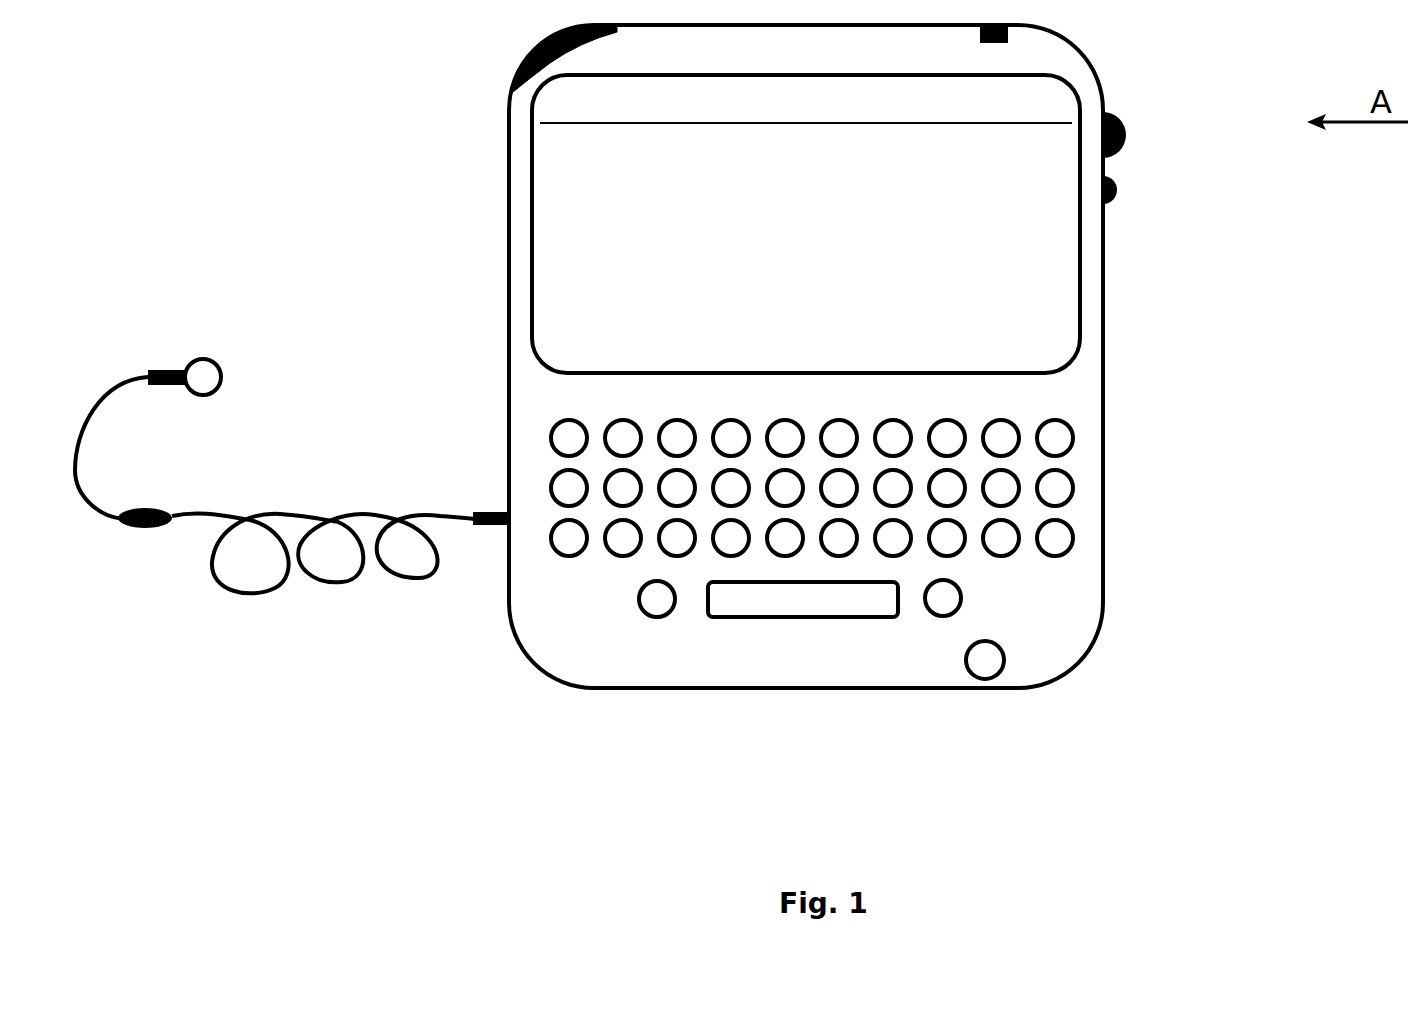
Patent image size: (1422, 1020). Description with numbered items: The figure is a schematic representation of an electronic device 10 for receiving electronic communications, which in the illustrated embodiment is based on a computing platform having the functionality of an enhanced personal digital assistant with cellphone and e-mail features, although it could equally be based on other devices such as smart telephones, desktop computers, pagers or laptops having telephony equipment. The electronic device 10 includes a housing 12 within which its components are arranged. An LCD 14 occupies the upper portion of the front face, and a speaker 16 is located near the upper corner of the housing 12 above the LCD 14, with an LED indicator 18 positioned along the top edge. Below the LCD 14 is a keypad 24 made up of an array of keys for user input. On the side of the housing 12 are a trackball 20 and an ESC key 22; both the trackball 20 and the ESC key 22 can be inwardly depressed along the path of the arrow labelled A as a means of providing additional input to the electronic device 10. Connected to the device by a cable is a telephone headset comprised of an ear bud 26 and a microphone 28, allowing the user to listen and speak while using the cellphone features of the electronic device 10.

The electronic device 10 is at (771, 712).
The housing 12 is at (1034, 658).
The LCD 14 is at (538, 356).
The speaker 16 is at (530, 50).
The LED indicator 18 is at (1008, 33).
The trackball 20 is at (1126, 137).
The ESC key 22 is at (1117, 190).
The keypad 24 is at (1086, 490).
The ear bud 26 is at (242, 371).
The microphone 28 is at (180, 507).